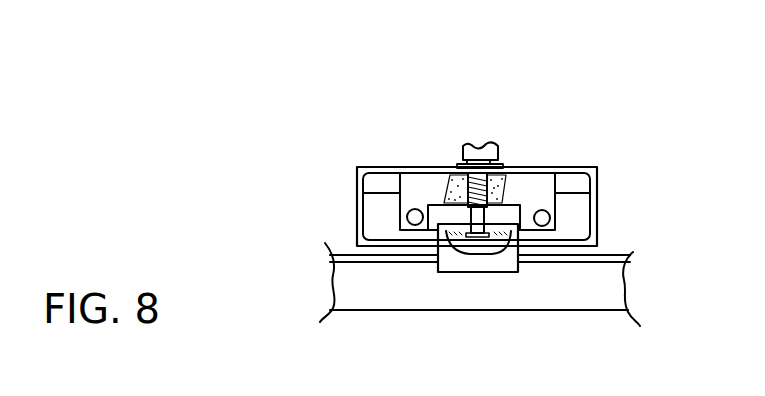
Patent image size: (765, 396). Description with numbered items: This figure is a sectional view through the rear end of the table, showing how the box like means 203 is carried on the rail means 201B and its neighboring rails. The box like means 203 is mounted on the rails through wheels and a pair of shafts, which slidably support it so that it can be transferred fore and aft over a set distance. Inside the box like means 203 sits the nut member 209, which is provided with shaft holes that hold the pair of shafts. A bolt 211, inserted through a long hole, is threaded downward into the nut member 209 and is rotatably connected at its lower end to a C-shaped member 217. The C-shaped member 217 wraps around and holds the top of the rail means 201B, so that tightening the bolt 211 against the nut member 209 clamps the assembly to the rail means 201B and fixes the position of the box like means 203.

The rail means 201B is at (405, 300).
The box like means 203 is at (600, 168).
The nut member 209 is at (422, 185).
The bolt 211 is at (489, 143).
The C-shaped member 217 is at (473, 267).